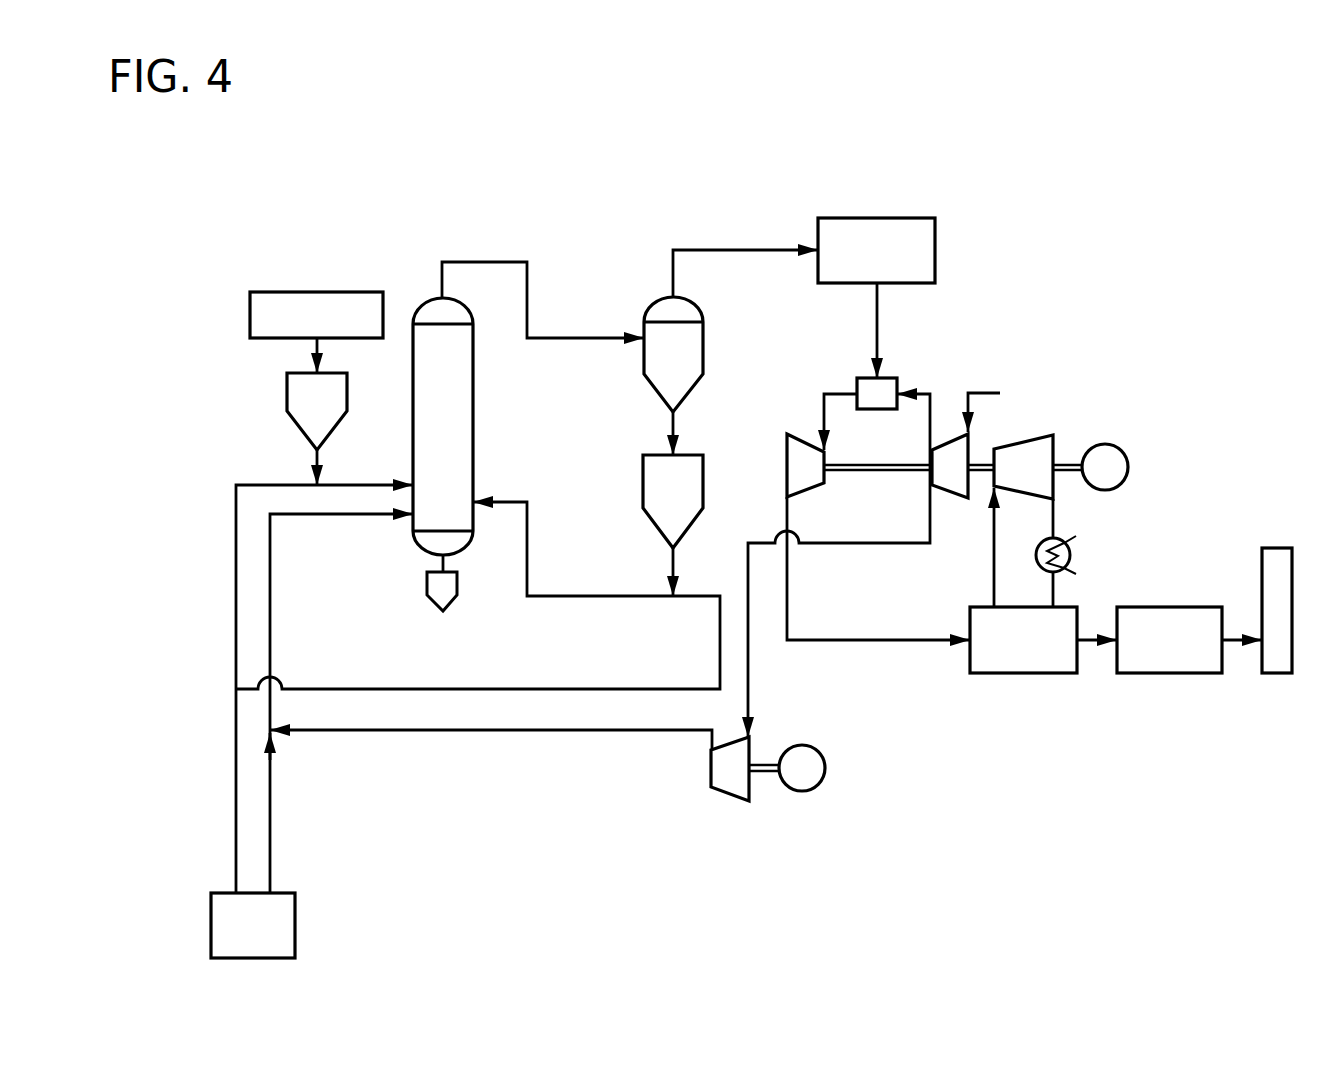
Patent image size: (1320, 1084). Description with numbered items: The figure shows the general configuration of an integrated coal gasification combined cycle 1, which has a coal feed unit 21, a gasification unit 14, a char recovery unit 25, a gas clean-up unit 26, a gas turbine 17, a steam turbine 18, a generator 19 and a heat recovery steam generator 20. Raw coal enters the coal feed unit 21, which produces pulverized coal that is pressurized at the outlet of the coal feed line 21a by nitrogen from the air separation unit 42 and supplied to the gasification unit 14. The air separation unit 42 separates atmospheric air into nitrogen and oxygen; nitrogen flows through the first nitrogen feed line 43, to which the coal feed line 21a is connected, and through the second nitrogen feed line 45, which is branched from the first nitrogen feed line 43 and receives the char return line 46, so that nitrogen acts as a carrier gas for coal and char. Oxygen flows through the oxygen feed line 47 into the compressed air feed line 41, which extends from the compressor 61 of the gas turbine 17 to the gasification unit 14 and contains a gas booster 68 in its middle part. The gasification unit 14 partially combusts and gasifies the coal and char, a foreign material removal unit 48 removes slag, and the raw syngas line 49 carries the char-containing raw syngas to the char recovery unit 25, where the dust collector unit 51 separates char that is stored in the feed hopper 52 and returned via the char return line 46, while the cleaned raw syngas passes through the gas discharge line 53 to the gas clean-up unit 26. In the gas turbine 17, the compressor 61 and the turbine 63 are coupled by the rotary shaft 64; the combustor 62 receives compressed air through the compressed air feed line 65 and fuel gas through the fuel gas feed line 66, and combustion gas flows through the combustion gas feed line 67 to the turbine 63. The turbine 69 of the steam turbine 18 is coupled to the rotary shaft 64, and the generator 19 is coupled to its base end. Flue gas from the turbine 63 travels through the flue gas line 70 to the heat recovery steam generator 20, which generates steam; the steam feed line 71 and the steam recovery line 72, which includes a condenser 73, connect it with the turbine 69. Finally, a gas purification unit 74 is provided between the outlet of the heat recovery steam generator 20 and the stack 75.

The integrated coal gasification combined cycle 1 is at (623, 145).
The gasification unit 14 is at (413, 290).
The gas turbine 17 is at (839, 443).
The steam turbine 18 is at (1029, 419).
The generator 19 is at (1122, 445).
The heat recovery steam generator 20 is at (1040, 676).
The coal feed unit 21 is at (287, 393).
The coal feed line 21a is at (317, 455).
The char recovery unit 25 is at (631, 374).
The gas clean-up unit 26 is at (877, 218).
The compressed air feed line 41 is at (749, 672).
The air separation unit 42 is at (211, 925).
The first nitrogen feed line 43 is at (236, 783).
The second nitrogen feed line 45 is at (335, 688).
The char return line 46 is at (673, 560).
The oxygen feed line 47 is at (270, 783).
The foreign material removal unit 48 is at (427, 585).
The raw syngas line 49 is at (487, 262).
The dust collector unit 51 is at (644, 360).
The feed hopper 52 is at (643, 478).
The gas discharge line 53 is at (720, 250).
The compressor 61 is at (955, 500).
The combustor 62 is at (880, 378).
The turbine 63 is at (787, 450).
The rotary shaft 64 is at (880, 472).
The compressed air feed line 65 is at (930, 410).
The fuel gas feed line 66 is at (877, 305).
The combustion gas feed line 67 is at (825, 392).
The gas booster 68 is at (727, 800).
The turbine 69 is at (1040, 437).
The flue gas line 70 is at (878, 640).
The steam feed line 71 is at (994, 590).
The steam recovery line 72 is at (1058, 597).
The condenser 73 is at (1068, 540).
The gas purification unit 74 is at (1170, 607).
The stack 75 is at (1280, 548).